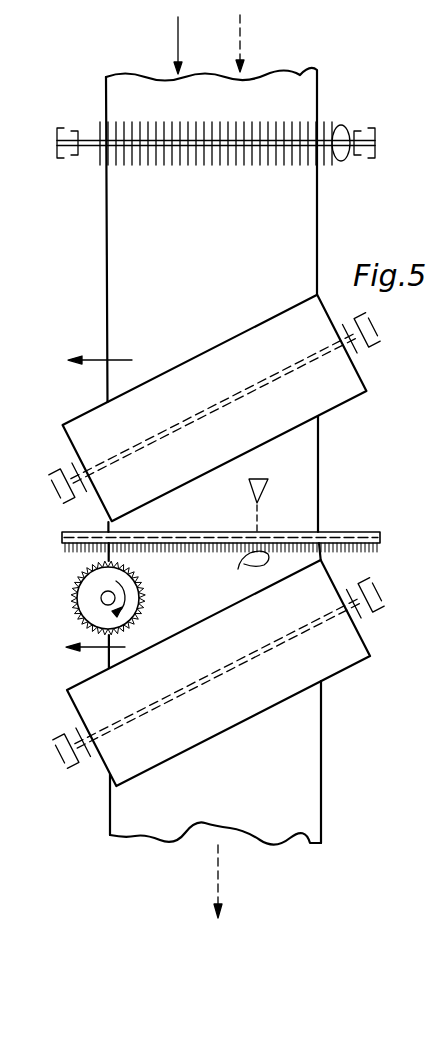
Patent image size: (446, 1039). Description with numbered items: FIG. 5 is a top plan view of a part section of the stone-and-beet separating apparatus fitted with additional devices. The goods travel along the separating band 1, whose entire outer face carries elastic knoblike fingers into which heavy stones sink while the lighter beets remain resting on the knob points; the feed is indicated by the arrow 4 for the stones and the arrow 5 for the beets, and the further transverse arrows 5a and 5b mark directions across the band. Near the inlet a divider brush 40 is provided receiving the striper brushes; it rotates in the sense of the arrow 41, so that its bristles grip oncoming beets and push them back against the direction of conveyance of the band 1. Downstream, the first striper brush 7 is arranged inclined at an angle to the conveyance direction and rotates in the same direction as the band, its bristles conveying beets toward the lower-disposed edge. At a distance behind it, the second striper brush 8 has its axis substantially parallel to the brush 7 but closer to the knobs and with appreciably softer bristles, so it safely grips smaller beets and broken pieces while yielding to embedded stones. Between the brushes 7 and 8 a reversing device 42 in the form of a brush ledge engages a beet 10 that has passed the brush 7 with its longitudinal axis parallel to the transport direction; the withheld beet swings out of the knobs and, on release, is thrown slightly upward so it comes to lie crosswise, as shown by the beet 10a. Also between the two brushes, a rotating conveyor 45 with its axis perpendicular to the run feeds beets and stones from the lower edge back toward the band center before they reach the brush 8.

The separating band 1 is at (318, 203).
The arrow for stones 4 is at (241, 38).
The arrow for beets 5 is at (178, 37).
The direction of transverse displacement 5a is at (101, 360).
The direction of transverse displacement 5b is at (93, 651).
The first striper brush 7 is at (340, 398).
The second striper brush 8 is at (352, 658).
The beet 10 is at (266, 482).
The reversed beet 10a is at (240, 568).
The divider brush 40 is at (345, 138).
The arrow of rotation of divider brush 41 is at (333, 124).
The reversing device 42 is at (368, 530).
The rotating conveyor 45 is at (90, 608).